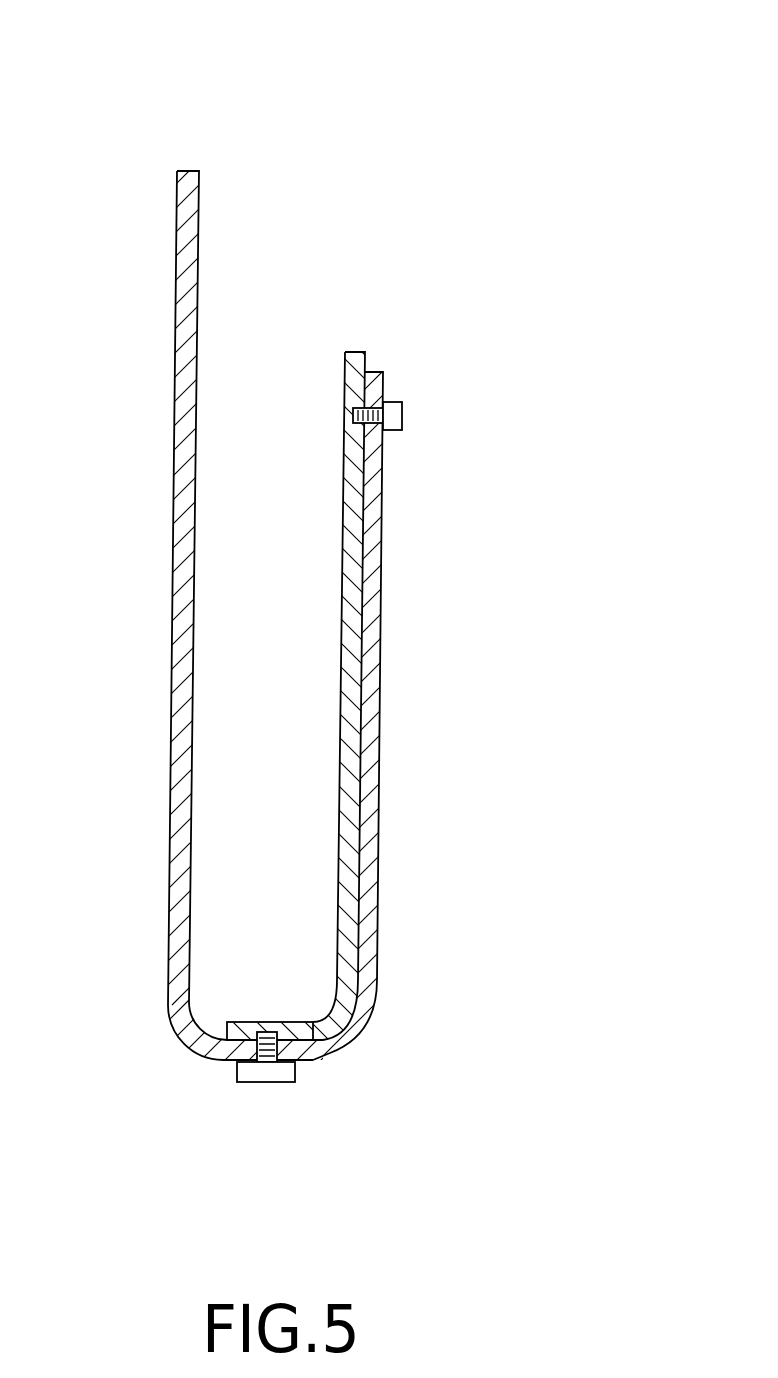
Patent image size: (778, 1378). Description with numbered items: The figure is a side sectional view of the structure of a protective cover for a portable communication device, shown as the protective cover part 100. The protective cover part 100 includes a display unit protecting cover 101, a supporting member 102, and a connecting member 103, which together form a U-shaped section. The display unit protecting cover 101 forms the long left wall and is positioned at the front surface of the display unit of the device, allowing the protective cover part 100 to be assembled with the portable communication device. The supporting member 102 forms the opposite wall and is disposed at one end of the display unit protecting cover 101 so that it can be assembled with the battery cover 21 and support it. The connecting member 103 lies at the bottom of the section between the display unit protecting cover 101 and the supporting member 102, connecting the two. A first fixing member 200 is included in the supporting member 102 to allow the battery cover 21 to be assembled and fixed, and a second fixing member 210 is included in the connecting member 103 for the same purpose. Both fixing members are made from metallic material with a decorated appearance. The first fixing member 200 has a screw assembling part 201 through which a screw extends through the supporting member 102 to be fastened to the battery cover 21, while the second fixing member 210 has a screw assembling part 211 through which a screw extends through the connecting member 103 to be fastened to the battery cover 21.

The protective cover part 100 is at (369, 78).
The display unit protecting cover 101 is at (174, 485).
The supporting member 102 is at (383, 580).
The connecting member 103 is at (313, 1063).
The battery cover 21 is at (353, 352).
The screw assembling part 201 is at (370, 372).
The first fixing member 200 is at (395, 415).
The second fixing member 210 is at (267, 1072).
The screw assembling part 211 is at (238, 1063).